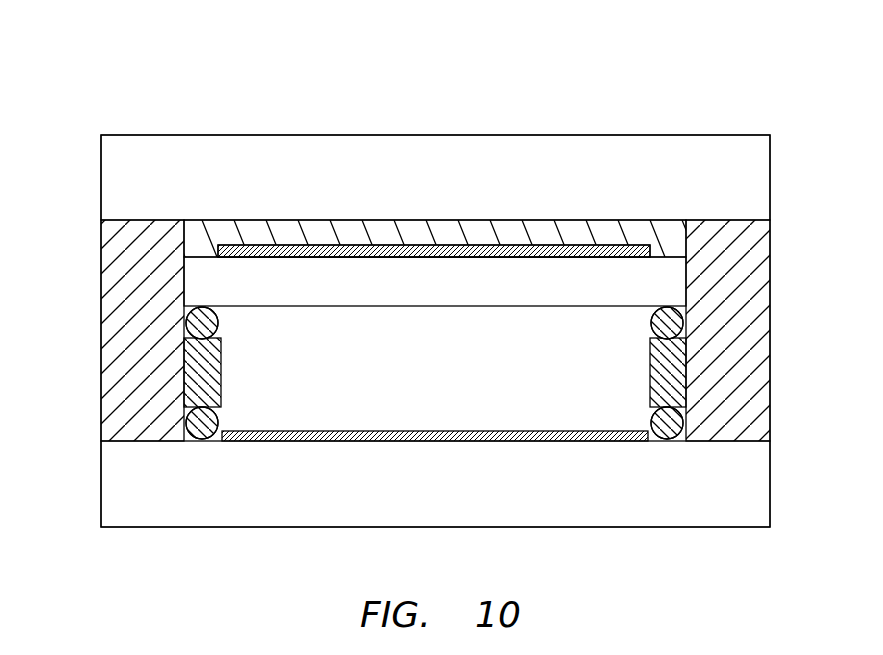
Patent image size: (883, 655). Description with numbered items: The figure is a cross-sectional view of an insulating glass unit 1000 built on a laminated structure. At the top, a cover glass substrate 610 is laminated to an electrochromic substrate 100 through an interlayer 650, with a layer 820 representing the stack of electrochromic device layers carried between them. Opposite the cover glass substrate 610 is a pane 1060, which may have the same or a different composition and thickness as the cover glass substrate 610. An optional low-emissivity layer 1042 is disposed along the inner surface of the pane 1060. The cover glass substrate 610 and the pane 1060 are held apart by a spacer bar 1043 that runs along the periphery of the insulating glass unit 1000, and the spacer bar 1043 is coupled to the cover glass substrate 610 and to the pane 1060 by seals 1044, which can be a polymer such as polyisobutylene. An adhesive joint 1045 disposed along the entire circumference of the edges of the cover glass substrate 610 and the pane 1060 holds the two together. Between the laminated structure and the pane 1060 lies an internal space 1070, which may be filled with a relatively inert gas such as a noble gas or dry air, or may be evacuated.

The insulating glass unit 1000 is at (130, 68).
The cover glass substrate 610 is at (458, 192).
The layer 820 is at (297, 251).
The interlayer 650 is at (577, 237).
The electrochromic substrate 100 is at (458, 292).
The adhesive joint 1045 is at (113, 337).
The seals 1044 is at (212, 318).
The spacer bar 1043 is at (215, 352).
The internal space 1070 is at (472, 375).
The low-emissivity layer 1042 is at (303, 441).
The pane 1060 is at (470, 493).